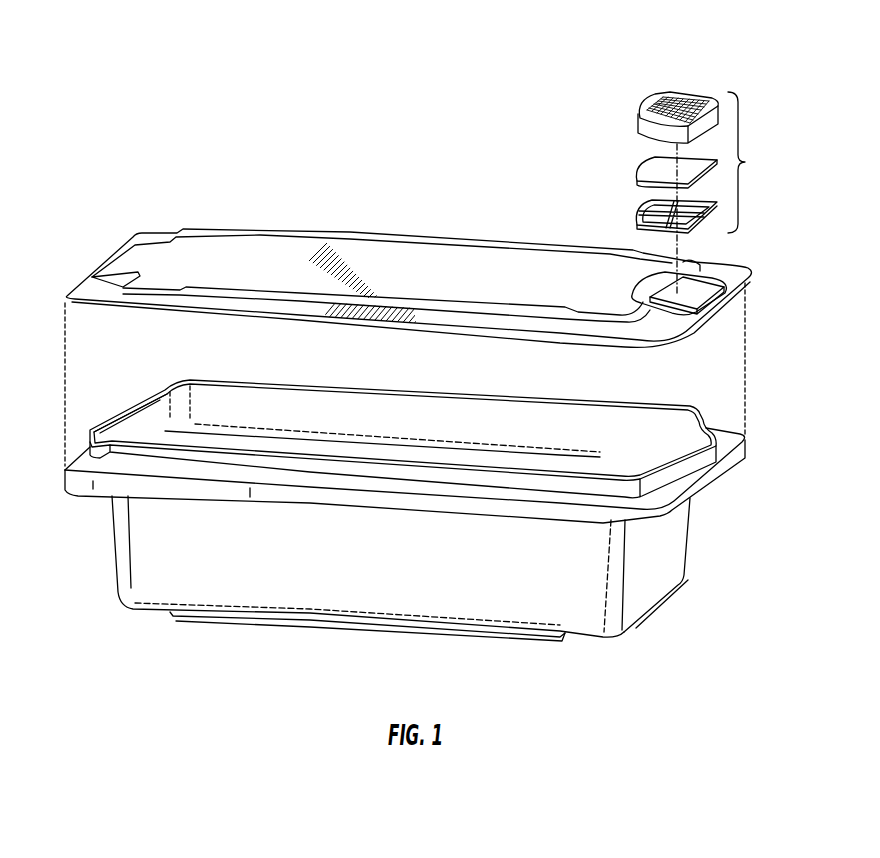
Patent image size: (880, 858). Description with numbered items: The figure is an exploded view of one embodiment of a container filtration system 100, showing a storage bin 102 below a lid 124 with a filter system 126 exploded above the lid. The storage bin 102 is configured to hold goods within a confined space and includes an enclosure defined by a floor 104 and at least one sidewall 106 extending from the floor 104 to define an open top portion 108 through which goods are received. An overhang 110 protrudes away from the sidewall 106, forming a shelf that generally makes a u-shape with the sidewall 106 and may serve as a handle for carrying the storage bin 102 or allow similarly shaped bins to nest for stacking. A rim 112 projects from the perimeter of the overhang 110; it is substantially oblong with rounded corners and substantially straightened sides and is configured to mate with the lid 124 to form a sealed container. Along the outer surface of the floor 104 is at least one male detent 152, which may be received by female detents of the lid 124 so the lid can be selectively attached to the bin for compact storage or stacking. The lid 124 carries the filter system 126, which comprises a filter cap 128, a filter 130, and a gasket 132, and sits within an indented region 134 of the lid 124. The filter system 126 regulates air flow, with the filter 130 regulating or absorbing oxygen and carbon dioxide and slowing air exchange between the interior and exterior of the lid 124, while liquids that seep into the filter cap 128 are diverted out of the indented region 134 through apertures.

The container filtration system 100 is at (188, 42).
The storage bin 102 is at (108, 542).
The floor 104 is at (499, 645).
The sidewall 106 is at (690, 545).
The open top portion 108 is at (520, 390).
The overhang 110 is at (65, 470).
The rim 112 is at (123, 400).
The lid 124 is at (140, 252).
The filter system 126 is at (725, 194).
The filter cap 128 is at (638, 120).
The filter 130 is at (638, 176).
The gasket 132 is at (640, 222).
The indented region 134 is at (692, 285).
The male detent 152 is at (392, 626).